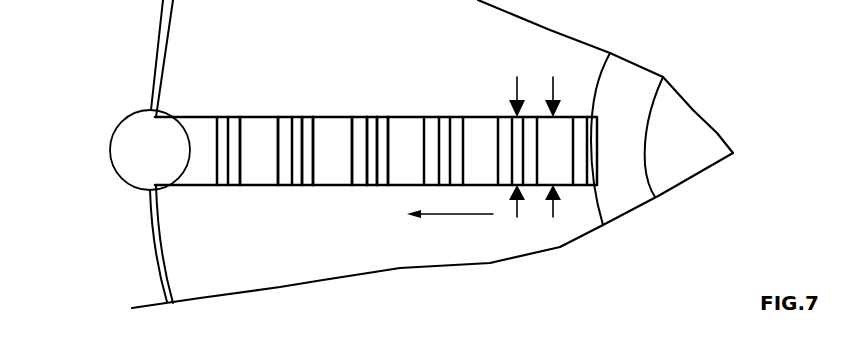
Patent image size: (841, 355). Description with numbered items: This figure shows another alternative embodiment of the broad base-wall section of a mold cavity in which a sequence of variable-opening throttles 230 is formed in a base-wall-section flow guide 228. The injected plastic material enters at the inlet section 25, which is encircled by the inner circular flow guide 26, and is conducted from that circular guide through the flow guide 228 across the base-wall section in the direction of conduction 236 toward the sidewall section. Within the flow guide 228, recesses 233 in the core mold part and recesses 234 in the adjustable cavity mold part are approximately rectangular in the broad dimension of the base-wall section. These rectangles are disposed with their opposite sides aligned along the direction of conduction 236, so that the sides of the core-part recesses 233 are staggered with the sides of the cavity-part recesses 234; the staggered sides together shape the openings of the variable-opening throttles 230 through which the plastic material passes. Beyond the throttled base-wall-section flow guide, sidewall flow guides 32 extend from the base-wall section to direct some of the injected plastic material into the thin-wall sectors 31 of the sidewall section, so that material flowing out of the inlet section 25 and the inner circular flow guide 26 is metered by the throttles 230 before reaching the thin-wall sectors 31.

The inlet section 25 is at (690, 173).
The inner circular flow guide 26 is at (612, 210).
The thin-wall sectors 31 is at (153, 63).
The flow guides 32 is at (128, 153).
The flow guide 228 is at (452, 93).
The variable-opening throttles 230 is at (297, 117).
The recesses within the core mold part 233 is at (382, 185).
The recesses within the adjustable cavity mold part 234 is at (283, 117).
The direction of conduction 236 is at (452, 205).